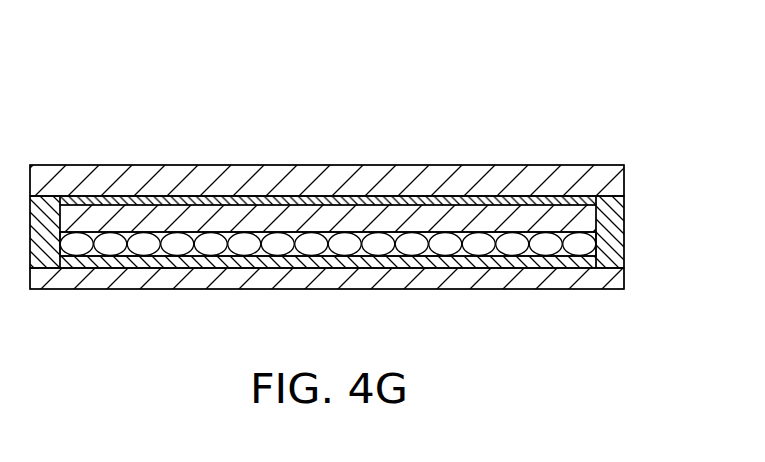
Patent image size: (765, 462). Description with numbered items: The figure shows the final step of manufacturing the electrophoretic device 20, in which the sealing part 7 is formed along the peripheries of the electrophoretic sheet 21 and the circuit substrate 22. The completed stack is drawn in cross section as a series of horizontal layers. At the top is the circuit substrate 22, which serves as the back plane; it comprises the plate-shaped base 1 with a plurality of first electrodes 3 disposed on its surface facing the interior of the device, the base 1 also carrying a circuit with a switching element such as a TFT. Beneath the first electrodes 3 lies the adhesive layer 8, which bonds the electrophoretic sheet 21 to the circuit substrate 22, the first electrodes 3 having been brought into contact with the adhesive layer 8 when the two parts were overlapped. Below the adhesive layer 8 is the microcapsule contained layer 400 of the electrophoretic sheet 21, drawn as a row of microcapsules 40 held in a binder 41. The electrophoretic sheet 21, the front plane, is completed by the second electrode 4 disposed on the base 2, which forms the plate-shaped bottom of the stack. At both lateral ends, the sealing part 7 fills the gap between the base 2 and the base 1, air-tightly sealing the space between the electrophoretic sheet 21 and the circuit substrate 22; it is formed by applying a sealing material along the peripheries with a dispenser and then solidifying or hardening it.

The base 1 is at (610, 178).
The base 2 is at (615, 275).
The first electrodes 3 is at (571, 200).
The second electrode 4 is at (562, 260).
The sealing part 7 is at (45, 262).
The adhesive layer 8 is at (462, 215).
The electrophoretic device 20 is at (617, 80).
The electrophoretic sheet 21 is at (620, 302).
The circuit substrate 22 is at (617, 150).
The microcapsules 40 is at (375, 242).
The binder 41 is at (298, 237).
The microcapsule contained layer 400 is at (381, 183).